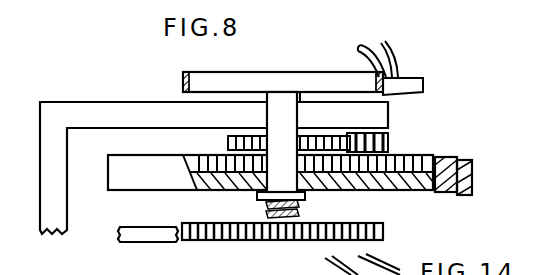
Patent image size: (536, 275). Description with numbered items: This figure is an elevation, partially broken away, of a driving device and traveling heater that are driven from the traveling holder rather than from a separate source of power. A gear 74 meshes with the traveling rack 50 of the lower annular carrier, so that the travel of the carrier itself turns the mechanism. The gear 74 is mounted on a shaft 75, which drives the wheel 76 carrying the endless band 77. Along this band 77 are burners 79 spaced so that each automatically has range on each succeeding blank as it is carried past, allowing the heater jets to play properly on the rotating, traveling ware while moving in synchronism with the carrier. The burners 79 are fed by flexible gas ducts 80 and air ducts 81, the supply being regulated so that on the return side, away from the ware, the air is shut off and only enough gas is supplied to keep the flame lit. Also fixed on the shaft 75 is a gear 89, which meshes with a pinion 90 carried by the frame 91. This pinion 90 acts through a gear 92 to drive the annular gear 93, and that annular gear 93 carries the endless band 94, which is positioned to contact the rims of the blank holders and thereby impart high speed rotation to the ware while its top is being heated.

The rack 50 is at (150, 243).
The gear 74 is at (219, 241).
The shaft 75 is at (265, 205).
The wheel 76 is at (334, 72).
The endless band 77 is at (184, 74).
The burners 79 is at (421, 78).
The flexible gas ducts 80 is at (396, 53).
The air ducts 81 is at (363, 46).
The gear 89 is at (228, 143).
The pinion 90 is at (389, 141).
The frame 91 is at (388, 119).
The gear 92 is at (413, 154).
The annular gear 93 is at (437, 158).
The endless band 94 is at (473, 180).